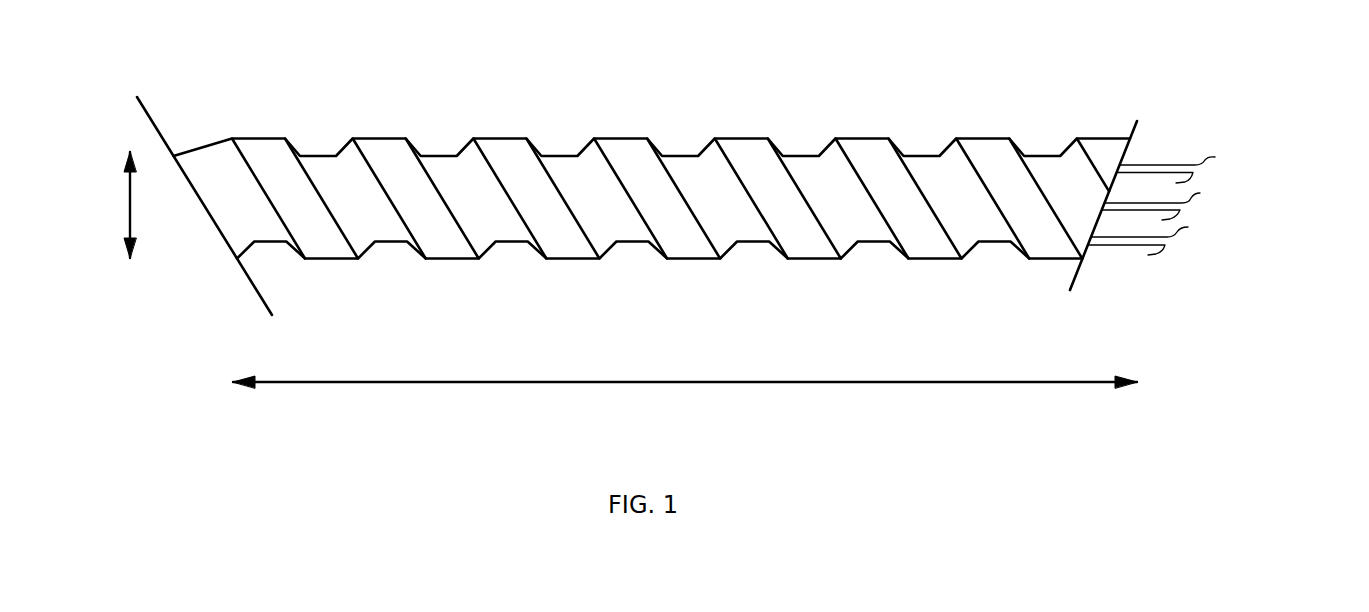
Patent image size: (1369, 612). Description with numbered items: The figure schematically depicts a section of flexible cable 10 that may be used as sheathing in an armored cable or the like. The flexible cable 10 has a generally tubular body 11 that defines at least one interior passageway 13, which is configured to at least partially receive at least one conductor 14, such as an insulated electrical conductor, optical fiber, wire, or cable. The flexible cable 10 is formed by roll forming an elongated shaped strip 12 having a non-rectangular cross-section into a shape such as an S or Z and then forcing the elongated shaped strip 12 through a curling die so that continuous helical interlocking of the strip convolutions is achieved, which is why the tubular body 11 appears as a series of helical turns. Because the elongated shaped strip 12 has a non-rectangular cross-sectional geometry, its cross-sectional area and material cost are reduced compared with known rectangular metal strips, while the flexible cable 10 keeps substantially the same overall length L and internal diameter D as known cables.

The flexible cable 10 is at (375, 106).
The tubular body 11 is at (250, 138).
The elongated shaped strip 12 is at (983, 138).
The interior passageway 13 is at (1137, 150).
The conductor 14 is at (1226, 152).
The internal diameter D is at (130, 205).
The overall length L is at (907, 382).